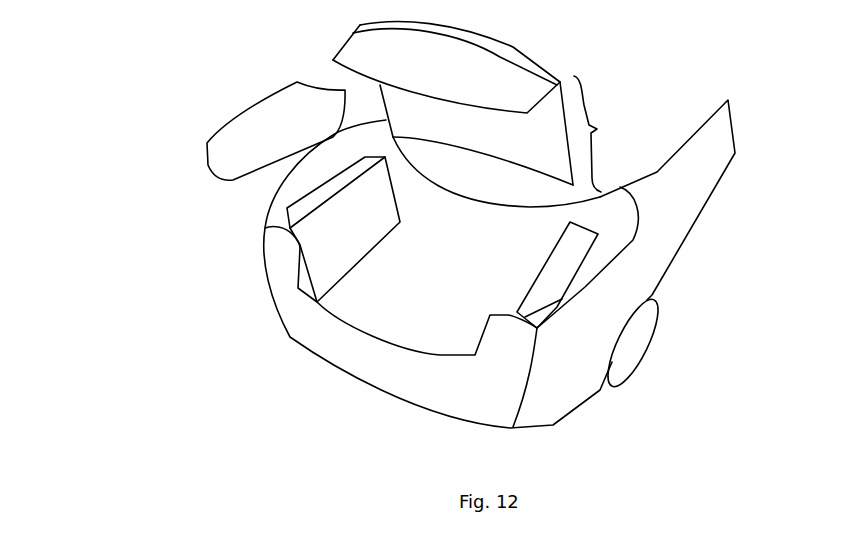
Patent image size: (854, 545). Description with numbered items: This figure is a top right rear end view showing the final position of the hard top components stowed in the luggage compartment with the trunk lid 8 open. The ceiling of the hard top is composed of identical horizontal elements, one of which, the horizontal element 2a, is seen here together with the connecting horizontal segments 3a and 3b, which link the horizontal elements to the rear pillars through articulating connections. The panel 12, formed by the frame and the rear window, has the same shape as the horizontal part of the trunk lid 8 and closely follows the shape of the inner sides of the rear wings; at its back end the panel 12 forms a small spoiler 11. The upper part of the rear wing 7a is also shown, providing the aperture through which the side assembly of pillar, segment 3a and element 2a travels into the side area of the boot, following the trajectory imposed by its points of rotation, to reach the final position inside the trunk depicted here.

The horizontal element 2a is at (340, 253).
The connecting horizontal segment 3a is at (308, 202).
The connecting horizontal segment 3b is at (557, 268).
The rear wing 7a is at (266, 126).
The trunk lid 8 is at (510, 90).
The spoiler 11 is at (510, 53).
The panel 12 is at (498, 141).